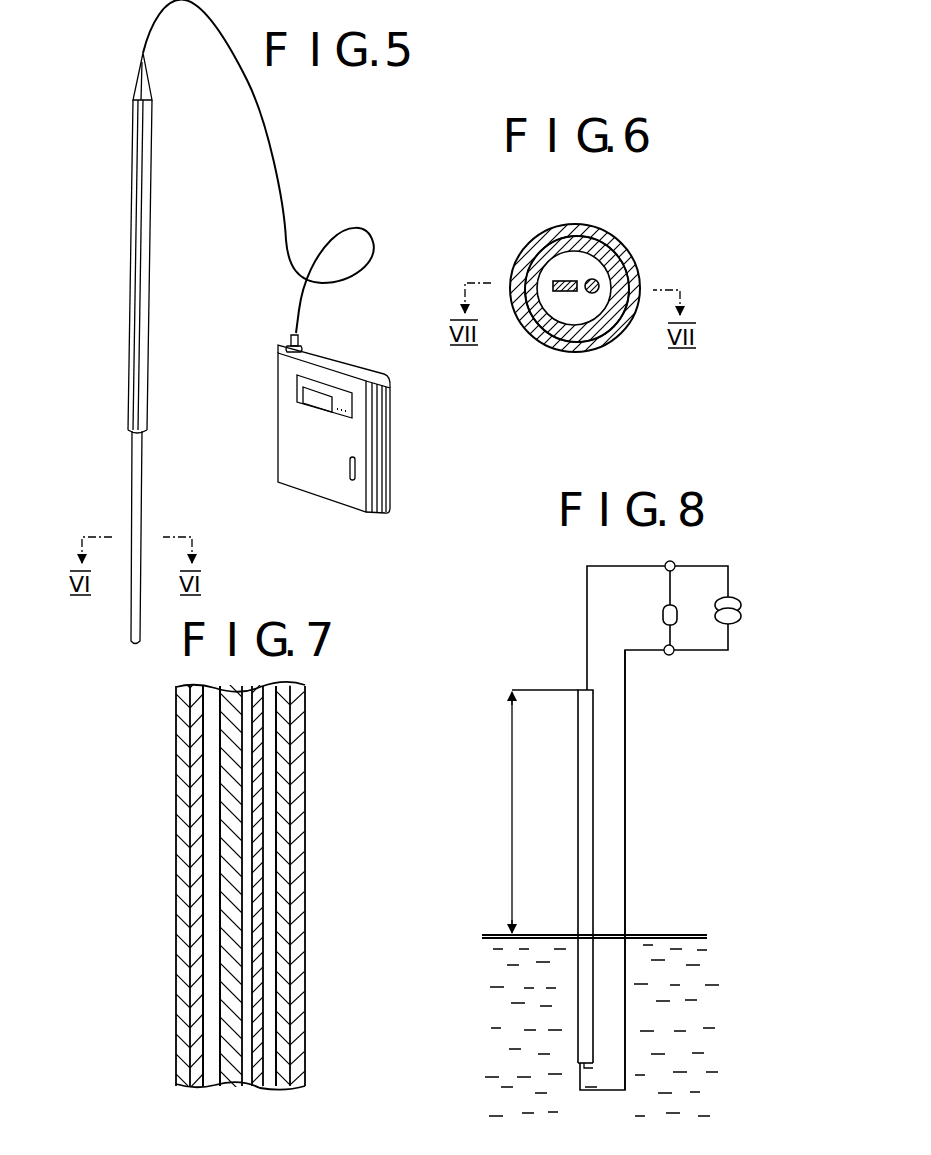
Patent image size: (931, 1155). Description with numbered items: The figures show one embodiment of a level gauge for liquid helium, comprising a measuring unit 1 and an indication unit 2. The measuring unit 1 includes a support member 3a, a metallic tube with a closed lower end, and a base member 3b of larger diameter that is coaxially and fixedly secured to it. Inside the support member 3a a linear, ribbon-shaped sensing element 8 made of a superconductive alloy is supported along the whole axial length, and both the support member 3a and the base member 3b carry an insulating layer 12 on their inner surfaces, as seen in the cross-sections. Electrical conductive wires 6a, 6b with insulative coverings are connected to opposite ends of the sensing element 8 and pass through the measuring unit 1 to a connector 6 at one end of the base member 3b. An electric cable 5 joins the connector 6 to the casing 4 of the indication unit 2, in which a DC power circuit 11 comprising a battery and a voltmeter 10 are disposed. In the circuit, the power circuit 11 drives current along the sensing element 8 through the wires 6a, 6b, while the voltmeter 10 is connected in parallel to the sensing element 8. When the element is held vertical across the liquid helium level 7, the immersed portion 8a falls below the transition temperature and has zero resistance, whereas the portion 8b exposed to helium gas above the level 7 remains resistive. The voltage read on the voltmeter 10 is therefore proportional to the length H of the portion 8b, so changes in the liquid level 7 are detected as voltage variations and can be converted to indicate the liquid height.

In FIG. 5, the measuring unit 1 is at (210, 506).
In FIG. 5, the indication unit 2 is at (346, 381).
In FIG. 5, the support member 3a is at (143, 490).
In FIG. 6, the support member 3a is at (620, 327).
In FIG. 7, the support member 3a is at (298, 727).
In FIG. 5, the base member 3b is at (134, 243).
In FIG. 5, the casing 4 is at (355, 371).
In FIG. 5, the electric cable 5 is at (259, 107).
In FIG. 5, the connector 6 is at (150, 78).
In FIG. 8, the electrical conductive wire 6a is at (587, 613).
In FIG. 6, the electrical conductive wire 6b is at (592, 294).
In FIG. 7, the electrical conductive wire 6b is at (253, 897).
In FIG. 8, the electrical conductive wire 6b is at (627, 753).
In FIG. 8, the level of liquid helium 7 is at (652, 935).
In FIG. 6, the sensing element 8 is at (557, 281).
In FIG. 7, the sensing element 8 is at (228, 1013).
In FIG. 8, the sensing element 8 is at (546, 879).
In FIG. 8, the portion of sensing element below liquid level 8a is at (578, 998).
In FIG. 8, the portion of sensing element exposed to helium gas 8b is at (582, 732).
In FIG. 8, the voltmeter 10 is at (663, 610).
In FIG. 8, the DC power circuit 11 is at (740, 615).
In FIG. 6, the insulating layer 12 is at (547, 322).
In FIG. 7, the insulating layer 12 is at (282, 823).
In FIG. 8, the length of exposed portion H is at (539, 811).